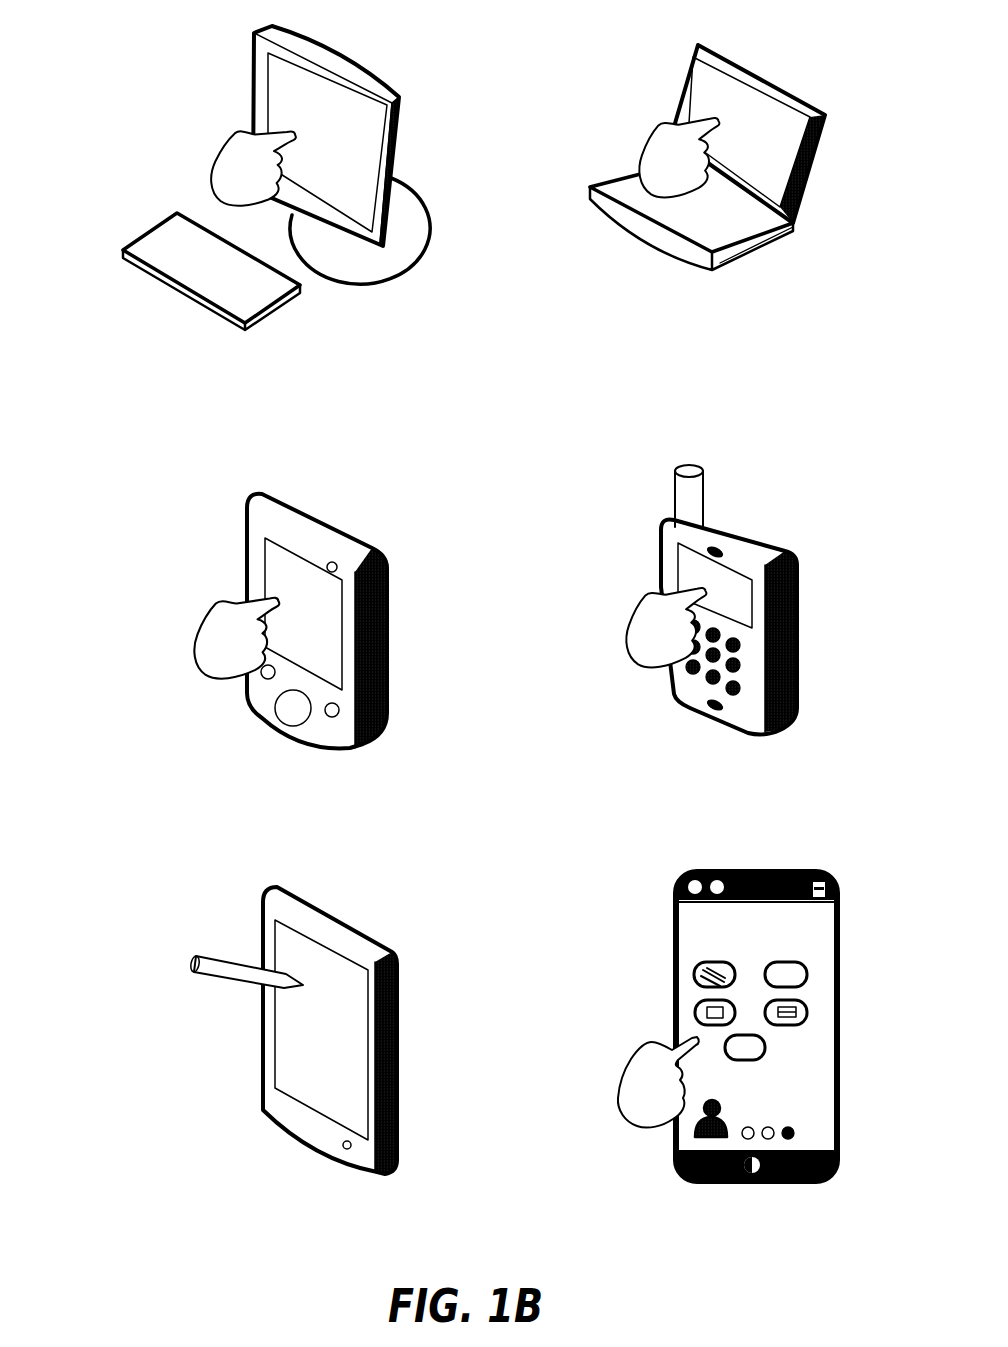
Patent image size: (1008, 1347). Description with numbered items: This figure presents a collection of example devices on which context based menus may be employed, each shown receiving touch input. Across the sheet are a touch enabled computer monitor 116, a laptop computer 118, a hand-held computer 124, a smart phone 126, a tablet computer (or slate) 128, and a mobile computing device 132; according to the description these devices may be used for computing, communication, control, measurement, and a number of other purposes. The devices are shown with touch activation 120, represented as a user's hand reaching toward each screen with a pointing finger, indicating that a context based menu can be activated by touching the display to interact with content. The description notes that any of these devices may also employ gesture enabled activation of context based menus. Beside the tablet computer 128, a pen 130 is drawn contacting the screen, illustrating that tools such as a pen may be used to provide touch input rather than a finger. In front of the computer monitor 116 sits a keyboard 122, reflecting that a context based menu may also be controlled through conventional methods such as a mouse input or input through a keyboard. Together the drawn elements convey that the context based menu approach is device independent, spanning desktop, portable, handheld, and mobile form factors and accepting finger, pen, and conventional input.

The touch enabled computer monitor 116 is at (235, 35).
The laptop computer 118 is at (699, 34).
The touch activation 120 is at (204, 144).
The keyboard 122 is at (151, 213).
The hand-held computer 124 is at (232, 482).
The smart phone 126 is at (645, 487).
The tablet computer 128 is at (286, 873).
The pen 130 is at (205, 941).
The mobile computing device 132 is at (700, 858).